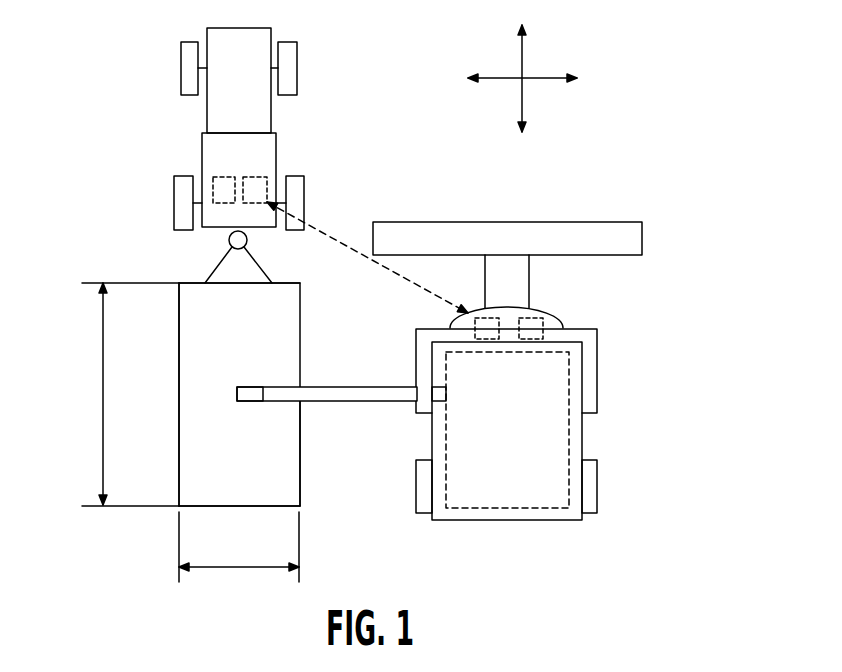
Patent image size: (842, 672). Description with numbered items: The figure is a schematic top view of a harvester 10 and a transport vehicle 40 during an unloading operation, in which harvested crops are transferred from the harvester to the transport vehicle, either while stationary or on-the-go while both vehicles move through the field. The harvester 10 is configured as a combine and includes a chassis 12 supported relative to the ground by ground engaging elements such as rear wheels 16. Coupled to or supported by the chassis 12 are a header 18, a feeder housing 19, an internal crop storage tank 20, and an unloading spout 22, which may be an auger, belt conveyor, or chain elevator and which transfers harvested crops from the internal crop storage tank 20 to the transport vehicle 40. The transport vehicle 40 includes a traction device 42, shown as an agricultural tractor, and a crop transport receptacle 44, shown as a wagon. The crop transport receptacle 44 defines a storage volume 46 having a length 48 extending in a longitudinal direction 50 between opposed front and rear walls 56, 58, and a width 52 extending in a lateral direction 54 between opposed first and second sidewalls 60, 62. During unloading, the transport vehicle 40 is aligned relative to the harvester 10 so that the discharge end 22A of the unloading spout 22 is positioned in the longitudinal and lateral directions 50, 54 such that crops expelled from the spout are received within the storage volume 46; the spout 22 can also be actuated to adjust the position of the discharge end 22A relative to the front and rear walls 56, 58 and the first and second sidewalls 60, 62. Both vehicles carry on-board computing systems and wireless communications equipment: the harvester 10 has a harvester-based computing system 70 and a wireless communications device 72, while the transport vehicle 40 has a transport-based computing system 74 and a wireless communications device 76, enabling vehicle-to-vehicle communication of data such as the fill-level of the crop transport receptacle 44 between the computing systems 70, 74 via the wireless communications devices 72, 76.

The harvester 10 is at (688, 260).
The chassis 12 is at (585, 437).
The rear wheels 16 is at (420, 482).
The header 18 is at (575, 232).
The feeder housing 19 is at (528, 282).
The internal crop storage tank 20 is at (510, 510).
The unloading spout 22 is at (347, 388).
The discharge end 22A is at (237, 395).
The transport vehicle 40 is at (75, 102).
The traction device 42 is at (285, 136).
The crop transport receptacle 44 is at (157, 518).
The storage volume 46 is at (226, 358).
The length 48 is at (103, 390).
The longitudinal direction 50 is at (524, 58).
The width 52 is at (275, 567).
The lateral direction 54 is at (493, 78).
The front wall 56 is at (193, 283).
The rear wall 58 is at (275, 506).
The first sidewall 60 is at (179, 377).
The second sidewall 62 is at (300, 427).
The harvester-based computing system 70 is at (550, 328).
The wireless communications device 72 is at (455, 323).
The transport-based computing system 74 is at (210, 178).
The wireless communications device 76 is at (270, 178).